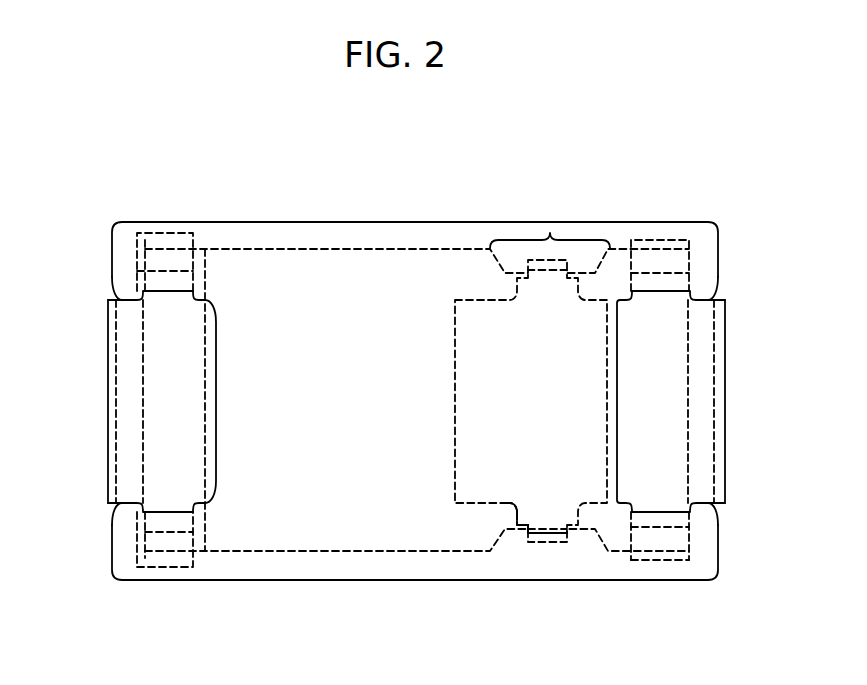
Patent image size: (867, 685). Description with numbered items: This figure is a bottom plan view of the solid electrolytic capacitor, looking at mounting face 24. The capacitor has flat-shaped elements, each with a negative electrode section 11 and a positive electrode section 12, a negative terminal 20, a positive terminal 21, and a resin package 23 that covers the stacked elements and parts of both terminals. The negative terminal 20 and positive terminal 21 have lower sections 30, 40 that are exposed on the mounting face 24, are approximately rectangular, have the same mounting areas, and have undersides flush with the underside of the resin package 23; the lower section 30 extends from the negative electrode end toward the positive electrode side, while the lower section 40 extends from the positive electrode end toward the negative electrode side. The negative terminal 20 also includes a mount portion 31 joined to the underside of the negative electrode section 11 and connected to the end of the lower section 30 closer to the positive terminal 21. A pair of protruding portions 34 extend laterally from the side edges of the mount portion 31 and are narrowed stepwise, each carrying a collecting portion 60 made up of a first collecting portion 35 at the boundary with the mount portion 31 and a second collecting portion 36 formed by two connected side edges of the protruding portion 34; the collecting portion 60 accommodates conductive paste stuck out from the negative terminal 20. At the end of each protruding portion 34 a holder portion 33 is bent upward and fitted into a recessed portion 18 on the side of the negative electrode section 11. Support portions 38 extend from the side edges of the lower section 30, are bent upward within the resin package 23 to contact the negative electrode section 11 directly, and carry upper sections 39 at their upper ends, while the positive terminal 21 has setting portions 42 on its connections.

The negative electrode section 11 is at (361, 249).
The positive electrode section 12 is at (195, 247).
The recessed portion 18 is at (551, 234).
The negative terminal 20 is at (727, 338).
The positive terminal 21 is at (105, 323).
The resin package 23 is at (312, 222).
The mounting face 24 is at (265, 568).
The lower section 30 is at (700, 428).
The mount portion 31 is at (488, 317).
The negative electrode holder portion 33 is at (548, 523).
The protruding portion 34 is at (552, 513).
The first collecting portion 35 is at (515, 507).
The second collecting portion 36 is at (523, 517).
The support portion 38 is at (677, 533).
The upper section 39 is at (667, 560).
The lower section 40 is at (125, 405).
The setting portion 42 is at (135, 545).
The collecting portion 60 is at (387, 640).